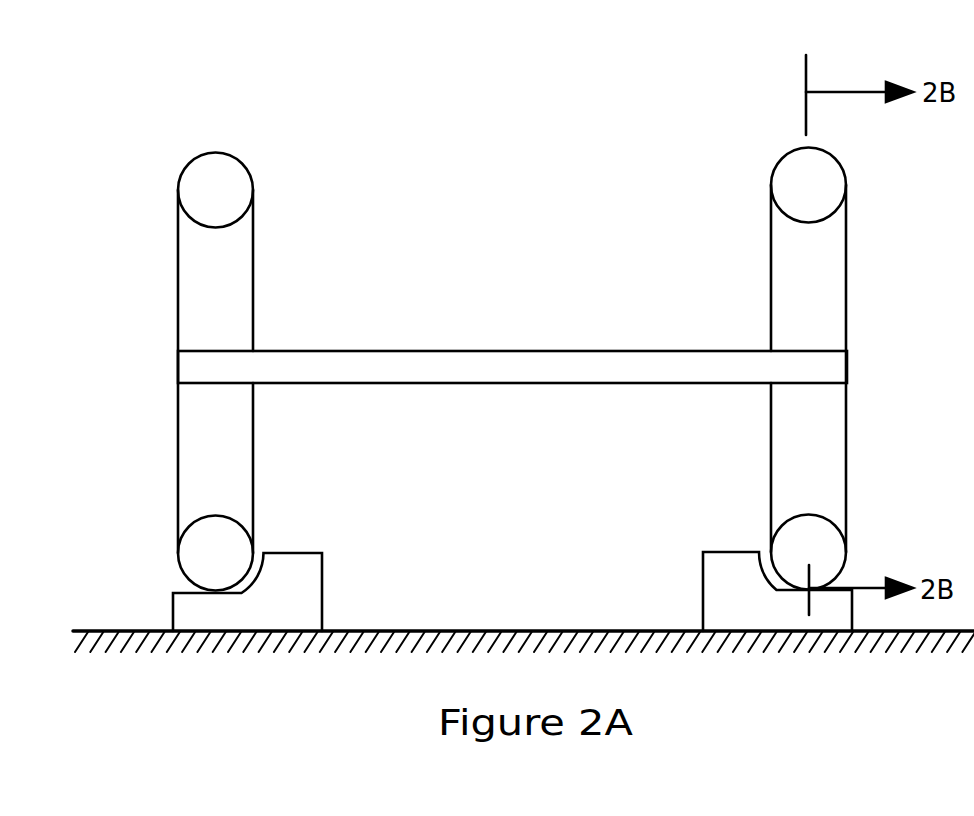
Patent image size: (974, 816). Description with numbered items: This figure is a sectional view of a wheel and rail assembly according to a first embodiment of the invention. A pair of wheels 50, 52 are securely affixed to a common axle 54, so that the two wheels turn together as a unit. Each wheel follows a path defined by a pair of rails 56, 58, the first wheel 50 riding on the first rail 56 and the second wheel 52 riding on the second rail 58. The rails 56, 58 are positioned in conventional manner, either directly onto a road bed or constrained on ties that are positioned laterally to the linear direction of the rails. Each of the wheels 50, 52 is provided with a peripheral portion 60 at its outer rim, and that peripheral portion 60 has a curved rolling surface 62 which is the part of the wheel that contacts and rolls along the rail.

The wheel 50 is at (253, 280).
The wheel 52 is at (768, 282).
The axle 54 is at (458, 350).
The rail 56 is at (298, 573).
The rail 58 is at (723, 583).
The peripheral portion 60 is at (213, 188).
The curved rolling surface 62 is at (218, 152).